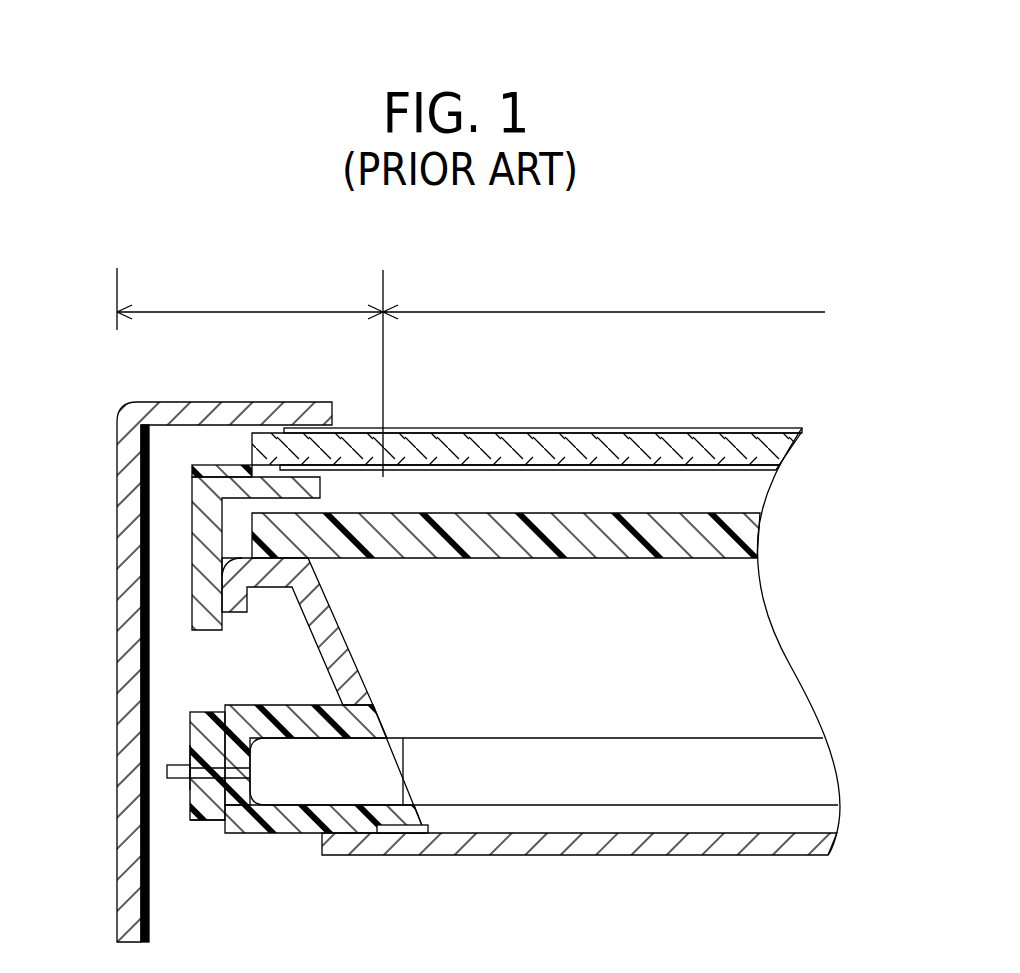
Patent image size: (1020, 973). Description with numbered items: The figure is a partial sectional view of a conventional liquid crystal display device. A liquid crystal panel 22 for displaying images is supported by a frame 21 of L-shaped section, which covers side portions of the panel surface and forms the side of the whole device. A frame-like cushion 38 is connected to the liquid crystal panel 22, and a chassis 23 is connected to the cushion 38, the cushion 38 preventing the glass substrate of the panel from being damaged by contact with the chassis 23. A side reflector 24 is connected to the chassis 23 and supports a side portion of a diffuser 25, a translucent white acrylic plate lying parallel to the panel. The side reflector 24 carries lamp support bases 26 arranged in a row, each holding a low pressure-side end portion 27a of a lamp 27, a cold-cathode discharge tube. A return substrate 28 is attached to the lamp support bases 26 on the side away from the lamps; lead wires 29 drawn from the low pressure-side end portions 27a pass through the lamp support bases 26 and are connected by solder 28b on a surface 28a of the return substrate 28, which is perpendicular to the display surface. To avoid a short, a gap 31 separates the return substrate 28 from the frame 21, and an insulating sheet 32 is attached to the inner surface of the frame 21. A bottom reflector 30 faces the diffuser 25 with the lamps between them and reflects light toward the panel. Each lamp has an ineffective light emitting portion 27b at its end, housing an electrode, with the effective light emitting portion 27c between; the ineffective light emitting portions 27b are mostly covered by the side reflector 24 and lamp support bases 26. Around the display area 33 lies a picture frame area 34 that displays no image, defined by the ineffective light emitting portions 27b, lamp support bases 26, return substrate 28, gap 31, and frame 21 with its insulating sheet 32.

The frame 21 is at (128, 533).
The liquid crystal panel 22 is at (743, 440).
The chassis 23 is at (203, 572).
The side reflector 24 is at (317, 616).
The diffuser 25 is at (720, 540).
The lamp support base 26 is at (300, 825).
The lamp 27 is at (531, 837).
The low pressure-side end portion 27a is at (243, 802).
The ineffective light emitting portion 27b is at (385, 778).
The effective light emitting portion 27c is at (510, 777).
The return substrate 28 is at (208, 715).
The surface 28a is at (190, 818).
The solder 28b is at (190, 760).
The lead wire 29 is at (185, 788).
The bottom reflector 30 is at (698, 838).
The gap 31 is at (160, 767).
The insulating sheet 32 is at (148, 913).
The display area 33 is at (622, 311).
The picture frame area 34 is at (265, 310).
The cushion 38 is at (197, 470).